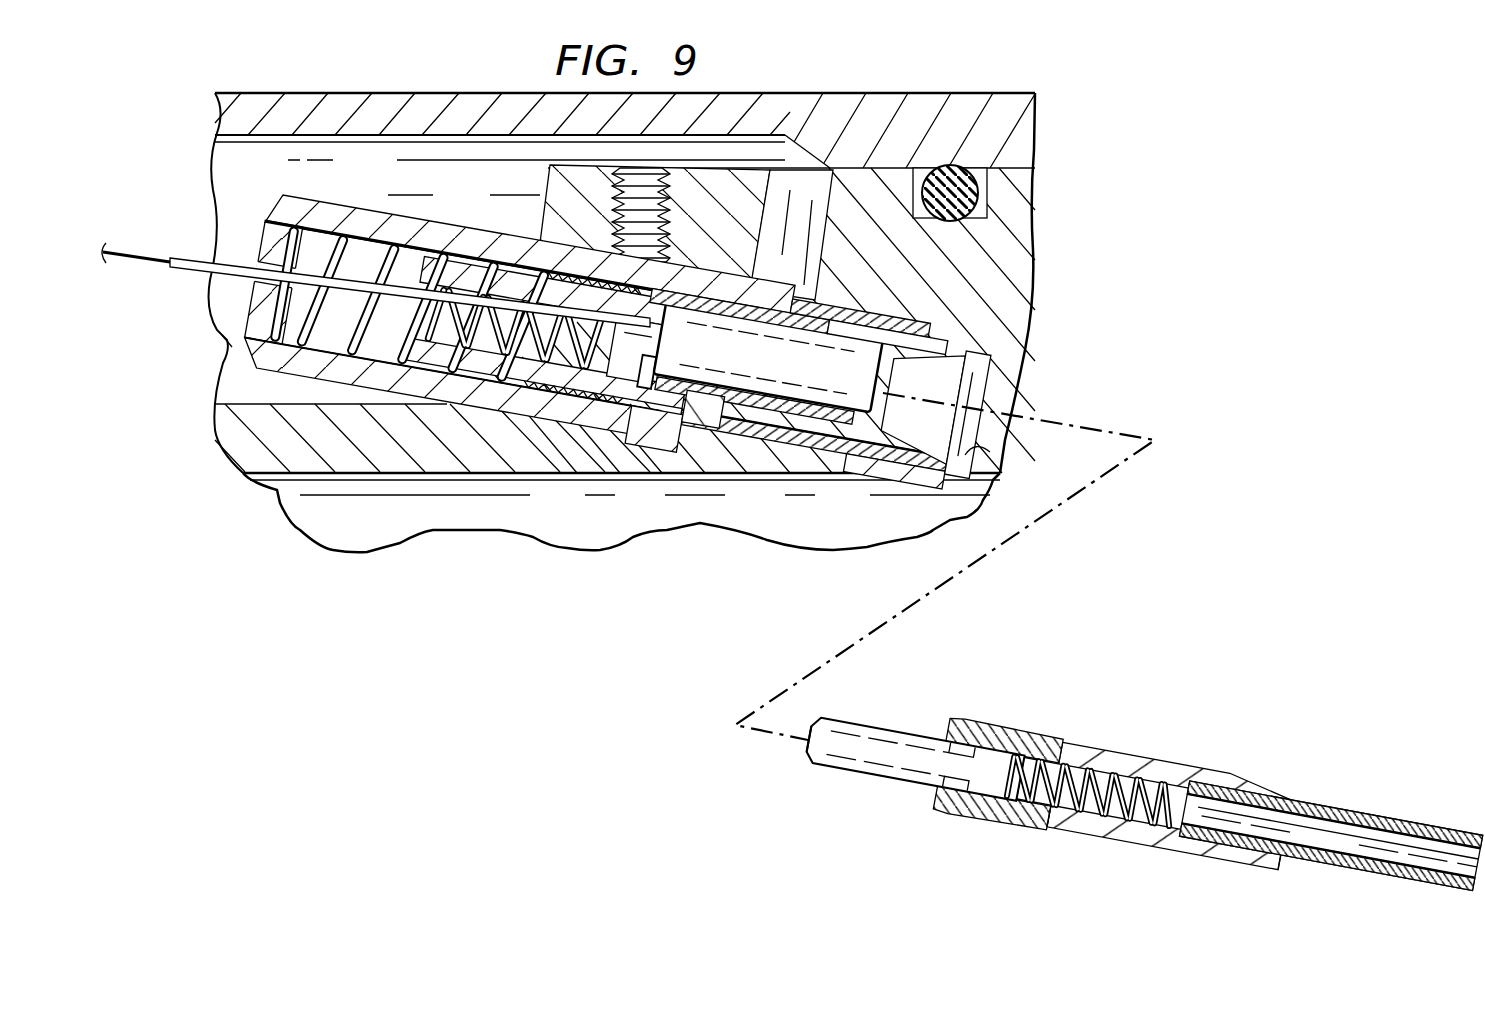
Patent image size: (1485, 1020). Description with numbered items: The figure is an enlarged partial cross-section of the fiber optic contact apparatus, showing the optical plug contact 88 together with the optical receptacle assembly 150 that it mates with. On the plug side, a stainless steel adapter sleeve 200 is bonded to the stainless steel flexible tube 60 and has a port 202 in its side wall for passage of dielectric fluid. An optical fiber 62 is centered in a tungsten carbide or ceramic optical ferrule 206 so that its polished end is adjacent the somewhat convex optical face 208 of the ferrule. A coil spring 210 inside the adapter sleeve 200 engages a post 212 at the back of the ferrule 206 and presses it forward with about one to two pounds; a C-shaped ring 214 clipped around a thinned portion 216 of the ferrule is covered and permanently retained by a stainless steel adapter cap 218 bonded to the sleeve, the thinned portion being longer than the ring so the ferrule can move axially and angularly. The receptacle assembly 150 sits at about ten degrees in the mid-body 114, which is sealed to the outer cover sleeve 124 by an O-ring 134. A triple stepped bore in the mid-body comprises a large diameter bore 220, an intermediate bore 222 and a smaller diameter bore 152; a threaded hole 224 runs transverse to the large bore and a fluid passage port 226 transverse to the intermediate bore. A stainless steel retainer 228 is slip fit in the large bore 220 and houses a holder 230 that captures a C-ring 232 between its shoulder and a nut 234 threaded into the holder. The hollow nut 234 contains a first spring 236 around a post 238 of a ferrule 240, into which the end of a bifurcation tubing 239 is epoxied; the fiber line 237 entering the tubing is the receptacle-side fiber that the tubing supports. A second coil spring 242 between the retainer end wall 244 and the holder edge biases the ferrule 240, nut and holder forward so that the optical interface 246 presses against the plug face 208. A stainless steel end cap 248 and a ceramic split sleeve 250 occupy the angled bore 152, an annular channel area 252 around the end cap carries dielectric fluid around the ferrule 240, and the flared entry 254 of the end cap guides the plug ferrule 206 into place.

The flexible tube 60 is at (1365, 800).
The optical fiber 62 is at (1430, 830).
The optical plug contact 88 is at (1099, 789).
The mid-body 114 is at (1038, 220).
The outer cover sleeve 124 is at (1038, 107).
The O-ring 134 is at (960, 185).
The optical receptacle assembly 150 is at (227, 343).
The smaller diameter bore 152 is at (990, 452).
The adapter sleeve 200 is at (1190, 768).
The port 202 is at (1105, 750).
The optical ferrule 206 is at (880, 725).
The optical face 208 is at (800, 752).
The coil spring 210 is at (1120, 825).
The post 212 is at (1025, 820).
The C-shaped ring 214 is at (965, 815).
The thinned portion 216 is at (950, 757).
The adapter cap 218 is at (1015, 730).
The large diameter bore 220 is at (545, 470).
The intermediate bore 222 is at (740, 440).
The threaded hole 224 is at (668, 230).
The fluid passage port 226 is at (818, 215).
The retainer 228 is at (355, 200).
The holder 230 is at (640, 410).
The C-ring 232 is at (660, 360).
The nut 234 is at (470, 260).
The first spring 236 is at (480, 395).
The optical fiber end 237 is at (128, 252).
The post 238 is at (580, 310).
The bifurcation tubing 239 is at (190, 258).
The ferrule 240 is at (748, 383).
The second coil spring 242 is at (310, 318).
The end wall 244 is at (270, 215).
The optical interface 246 is at (863, 322).
The end cap 248 is at (923, 350).
The split sleeve 250 is at (860, 460).
The annular channel area 252 is at (835, 305).
The flared entry 254 is at (1010, 395).